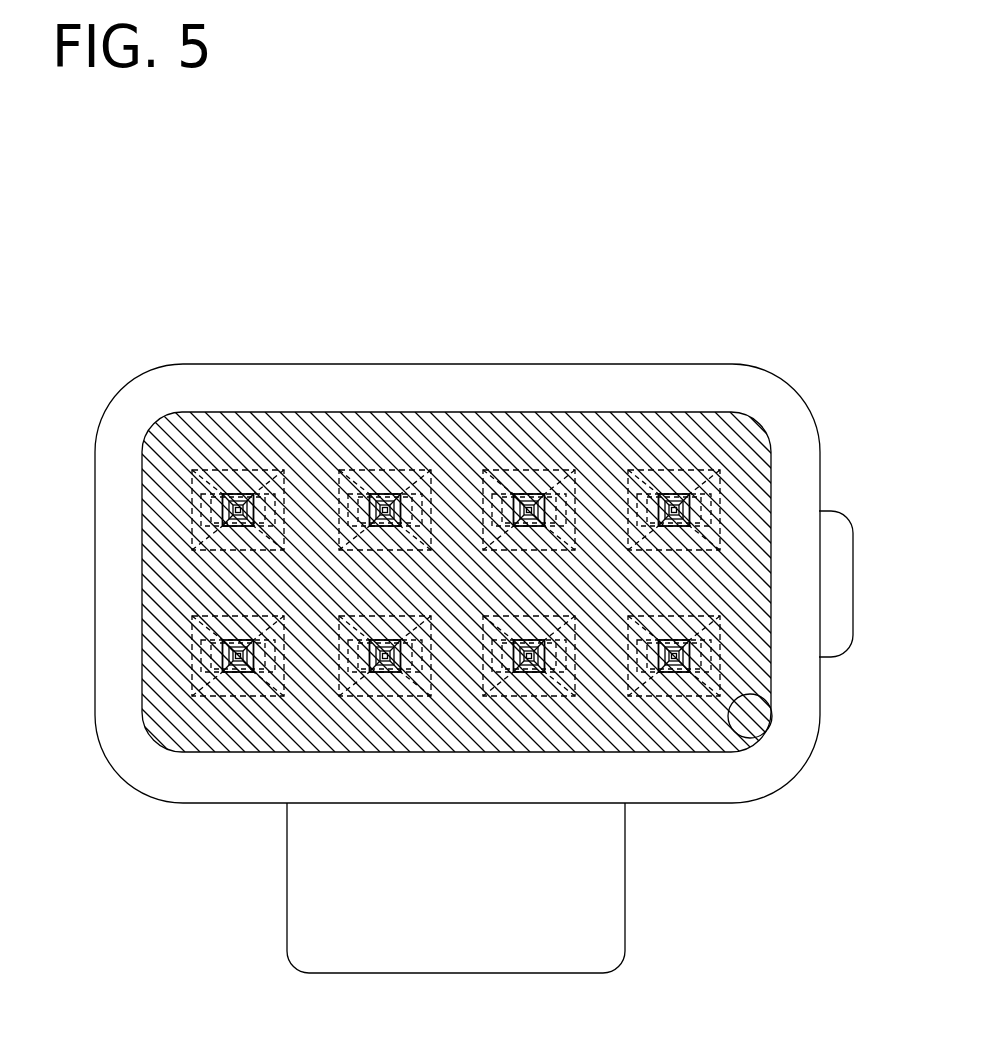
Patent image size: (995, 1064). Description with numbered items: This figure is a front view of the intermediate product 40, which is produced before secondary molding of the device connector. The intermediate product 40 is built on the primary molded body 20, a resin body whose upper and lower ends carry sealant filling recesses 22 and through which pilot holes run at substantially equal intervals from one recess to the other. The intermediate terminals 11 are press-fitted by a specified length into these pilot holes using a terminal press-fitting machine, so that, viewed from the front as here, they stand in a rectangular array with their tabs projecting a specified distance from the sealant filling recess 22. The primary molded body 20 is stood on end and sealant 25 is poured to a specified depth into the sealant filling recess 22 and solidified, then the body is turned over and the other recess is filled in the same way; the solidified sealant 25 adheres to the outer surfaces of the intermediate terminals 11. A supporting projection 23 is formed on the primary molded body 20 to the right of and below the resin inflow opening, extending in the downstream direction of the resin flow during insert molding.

The intermediate product 40 is at (148, 352).
The primary molded body 20 is at (578, 377).
The sealant 25 is at (735, 437).
The intermediate terminal 11 is at (238, 504).
The sealant filling recess 22 is at (752, 739).
The supporting projection 23 is at (443, 927).